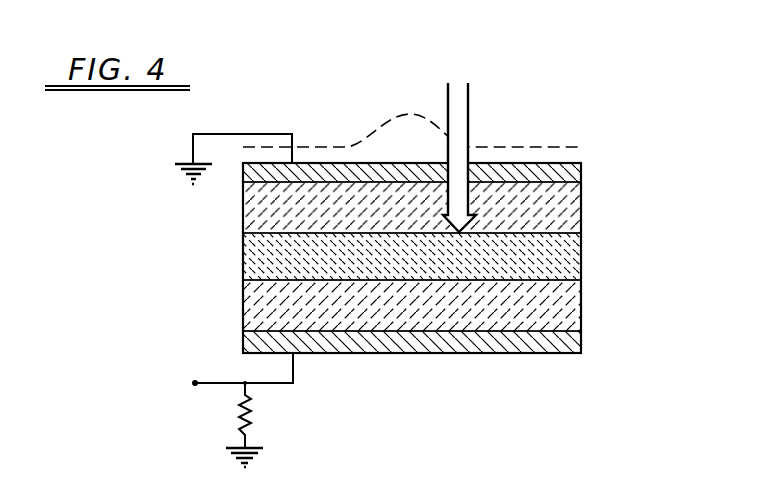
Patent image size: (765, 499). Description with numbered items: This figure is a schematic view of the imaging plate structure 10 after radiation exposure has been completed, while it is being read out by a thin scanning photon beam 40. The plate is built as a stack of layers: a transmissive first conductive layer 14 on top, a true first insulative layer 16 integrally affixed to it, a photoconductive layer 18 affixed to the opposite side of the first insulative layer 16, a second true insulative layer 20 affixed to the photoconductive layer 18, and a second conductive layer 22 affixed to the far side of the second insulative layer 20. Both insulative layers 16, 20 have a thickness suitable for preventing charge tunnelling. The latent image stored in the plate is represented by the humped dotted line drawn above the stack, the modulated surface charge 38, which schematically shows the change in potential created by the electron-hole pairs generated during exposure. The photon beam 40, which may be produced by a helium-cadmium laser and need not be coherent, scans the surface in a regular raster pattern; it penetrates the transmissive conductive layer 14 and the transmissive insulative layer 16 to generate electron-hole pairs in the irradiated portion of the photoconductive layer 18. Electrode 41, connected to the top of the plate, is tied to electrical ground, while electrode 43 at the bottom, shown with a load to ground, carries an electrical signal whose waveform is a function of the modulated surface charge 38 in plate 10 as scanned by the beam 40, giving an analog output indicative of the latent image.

The imaging plate structure 10 is at (598, 137).
The first conductive layer 14 is at (584, 172).
The first insulative layer 16 is at (573, 210).
The photoconductive layer 18 is at (570, 258).
The second insulative layer 20 is at (584, 303).
The second conductive layer 22 is at (584, 340).
The modulated surface charge 38 is at (514, 142).
The photon beam 40 is at (473, 100).
The electrode 41 is at (200, 130).
The electrode 43 is at (296, 390).